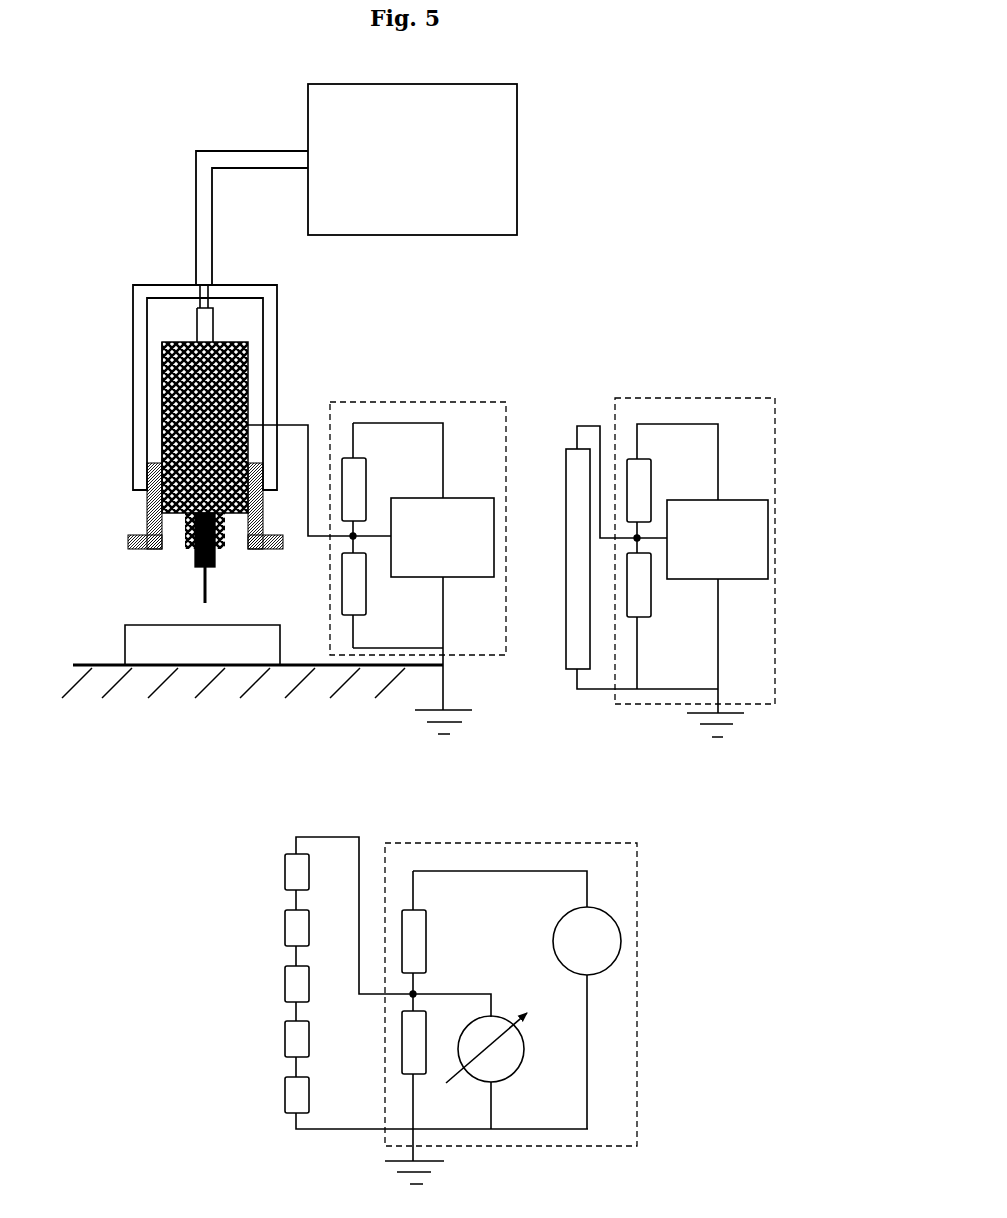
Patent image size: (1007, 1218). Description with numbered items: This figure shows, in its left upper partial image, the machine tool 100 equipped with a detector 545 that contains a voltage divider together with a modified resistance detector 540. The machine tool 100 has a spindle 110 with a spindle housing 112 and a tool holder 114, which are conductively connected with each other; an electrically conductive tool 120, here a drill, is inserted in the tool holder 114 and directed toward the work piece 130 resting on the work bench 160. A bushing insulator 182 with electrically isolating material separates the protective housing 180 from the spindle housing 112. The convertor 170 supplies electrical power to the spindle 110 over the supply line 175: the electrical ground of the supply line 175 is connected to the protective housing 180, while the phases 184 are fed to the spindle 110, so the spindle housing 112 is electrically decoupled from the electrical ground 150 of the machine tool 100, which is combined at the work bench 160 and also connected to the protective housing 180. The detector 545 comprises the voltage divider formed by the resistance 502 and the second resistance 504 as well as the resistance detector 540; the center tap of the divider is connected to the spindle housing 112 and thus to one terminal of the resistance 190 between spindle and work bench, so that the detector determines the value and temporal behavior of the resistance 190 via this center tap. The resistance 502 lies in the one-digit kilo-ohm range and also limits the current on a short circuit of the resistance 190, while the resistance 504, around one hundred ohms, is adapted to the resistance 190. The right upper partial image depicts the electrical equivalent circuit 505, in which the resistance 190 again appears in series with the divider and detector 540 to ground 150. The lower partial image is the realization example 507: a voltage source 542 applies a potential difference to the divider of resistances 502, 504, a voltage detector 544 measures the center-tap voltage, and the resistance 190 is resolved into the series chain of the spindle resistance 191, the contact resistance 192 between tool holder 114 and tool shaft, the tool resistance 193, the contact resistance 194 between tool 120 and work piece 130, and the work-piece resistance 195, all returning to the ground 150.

The machine tool 100 is at (174, 247).
The spindle 110 is at (223, 377).
The spindle housing 112 is at (162, 408).
The tool holder 114 is at (182, 538).
The tool 120 is at (207, 583).
The work piece 130 is at (202, 645).
The electrical ground 150 is at (718, 729).
The work bench 160 is at (178, 670).
The convertor 170 is at (412, 159).
The supply line 175 is at (230, 158).
The protective housing 180 is at (272, 318).
The bushing insulator 182 is at (152, 503).
The phases 184 is at (197, 302).
The resistance 190 is at (571, 465).
The resistance of the spindle 191 is at (293, 872).
The contact resistance 192 is at (293, 928).
The resistance of the tool 193 is at (293, 984).
The contact resistance 194 is at (293, 1039).
The resistance of the work piece 195 is at (293, 1096).
The resistance 502 is at (353, 483).
The second resistance 504 is at (359, 601).
The electrical equivalent circuit 505 is at (627, 372).
The realization example 507 is at (202, 908).
The resistance detector 540 is at (579, 538).
The voltage source 542 is at (609, 945).
The voltage detector 544 is at (514, 1049).
The detector 545 is at (477, 437).